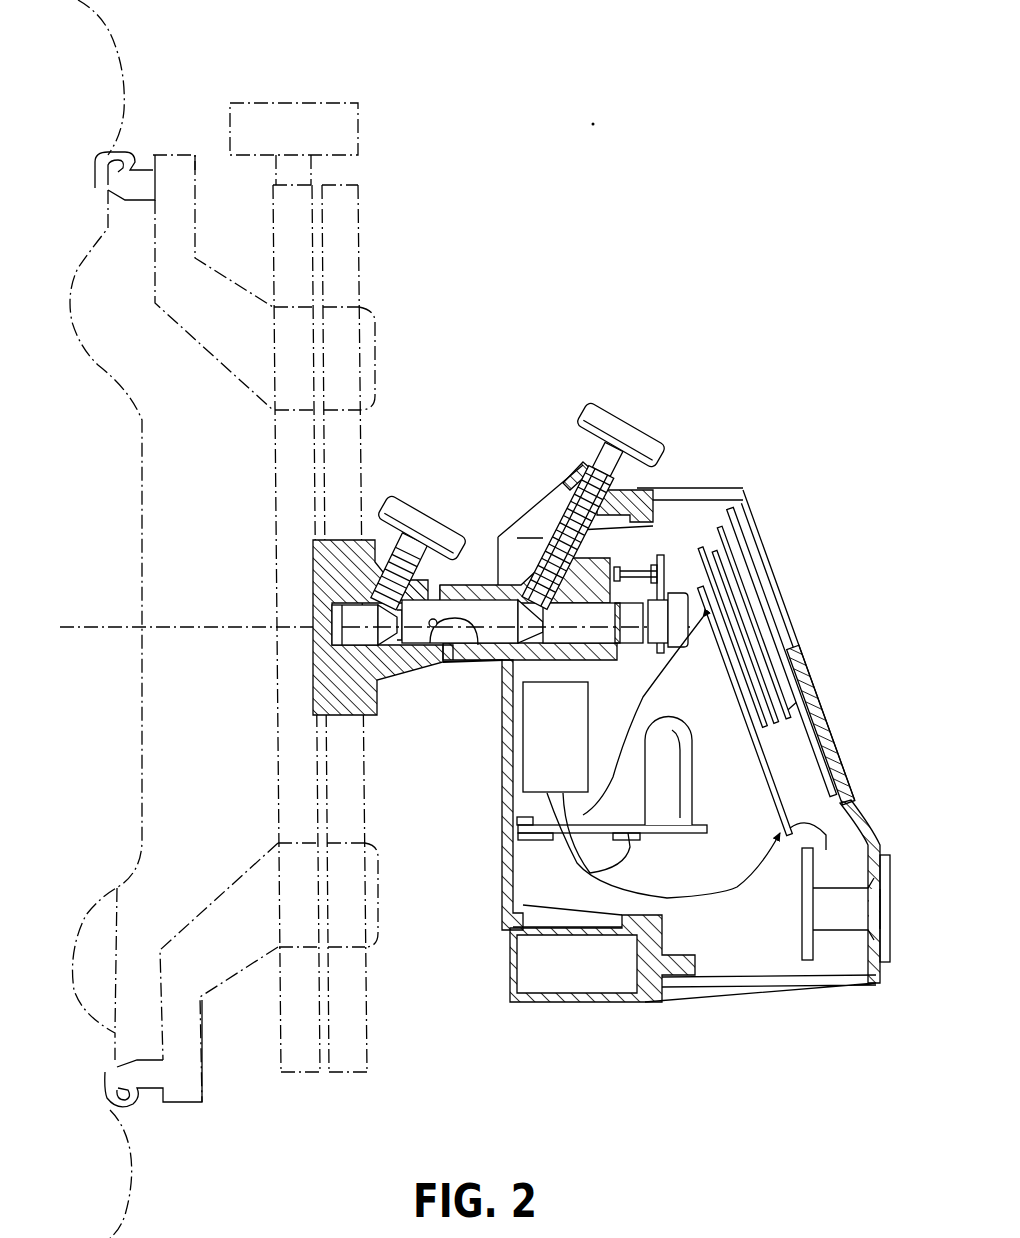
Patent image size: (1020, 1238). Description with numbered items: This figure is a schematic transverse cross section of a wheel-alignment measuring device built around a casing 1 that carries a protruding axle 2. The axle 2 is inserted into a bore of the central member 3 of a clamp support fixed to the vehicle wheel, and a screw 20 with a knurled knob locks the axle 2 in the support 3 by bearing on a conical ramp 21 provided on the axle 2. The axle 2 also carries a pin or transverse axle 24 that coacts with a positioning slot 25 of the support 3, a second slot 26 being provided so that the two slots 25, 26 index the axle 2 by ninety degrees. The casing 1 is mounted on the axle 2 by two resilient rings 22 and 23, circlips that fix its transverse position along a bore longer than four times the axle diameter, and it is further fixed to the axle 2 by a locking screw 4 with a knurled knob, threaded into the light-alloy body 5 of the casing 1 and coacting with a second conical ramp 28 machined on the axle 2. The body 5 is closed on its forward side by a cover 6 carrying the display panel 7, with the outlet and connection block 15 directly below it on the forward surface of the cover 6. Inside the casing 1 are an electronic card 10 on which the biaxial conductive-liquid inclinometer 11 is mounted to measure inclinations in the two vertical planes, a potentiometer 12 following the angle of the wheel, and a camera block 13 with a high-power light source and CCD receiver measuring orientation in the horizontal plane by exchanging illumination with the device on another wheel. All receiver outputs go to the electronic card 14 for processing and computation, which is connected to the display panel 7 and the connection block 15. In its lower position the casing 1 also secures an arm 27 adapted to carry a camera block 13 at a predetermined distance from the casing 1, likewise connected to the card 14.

The casing 1 is at (745, 465).
The protruding axle 2 is at (486, 612).
The central member of a support 3 is at (307, 547).
The locking screw 4 is at (628, 418).
The body 5 is at (512, 908).
The cover 6 is at (780, 1000).
The display panel 7 is at (802, 655).
The electronic card 10 is at (662, 828).
The biaxial inclinometer 11 is at (697, 775).
The potentiometer 12 is at (680, 637).
The camera block 13 is at (540, 745).
The electronic card for processing and computation 14 is at (760, 762).
The outlet and connection block 15 is at (830, 915).
The screw with knurled knob 20 is at (398, 495).
The conical ramp 21 is at (362, 637).
The resilient ring 22 is at (448, 662).
The resilient ring 23 is at (617, 657).
The pin or transverse axle 24 is at (481, 645).
The positioning slot 25 is at (433, 628).
The positioning slot 26 is at (428, 588).
The arm 27 is at (555, 995).
The second conical ramp 28 is at (533, 630).